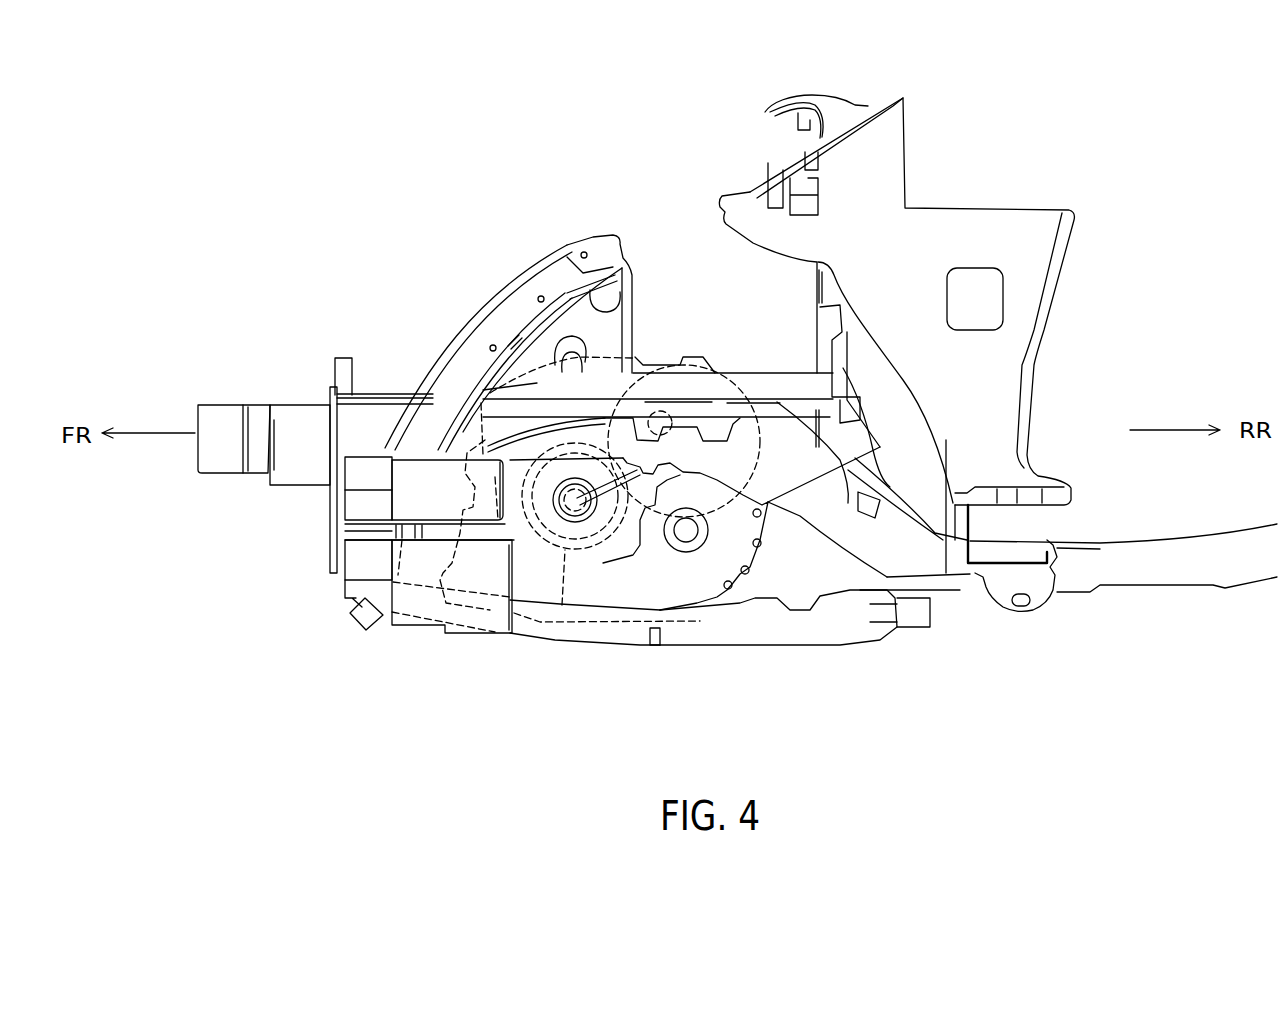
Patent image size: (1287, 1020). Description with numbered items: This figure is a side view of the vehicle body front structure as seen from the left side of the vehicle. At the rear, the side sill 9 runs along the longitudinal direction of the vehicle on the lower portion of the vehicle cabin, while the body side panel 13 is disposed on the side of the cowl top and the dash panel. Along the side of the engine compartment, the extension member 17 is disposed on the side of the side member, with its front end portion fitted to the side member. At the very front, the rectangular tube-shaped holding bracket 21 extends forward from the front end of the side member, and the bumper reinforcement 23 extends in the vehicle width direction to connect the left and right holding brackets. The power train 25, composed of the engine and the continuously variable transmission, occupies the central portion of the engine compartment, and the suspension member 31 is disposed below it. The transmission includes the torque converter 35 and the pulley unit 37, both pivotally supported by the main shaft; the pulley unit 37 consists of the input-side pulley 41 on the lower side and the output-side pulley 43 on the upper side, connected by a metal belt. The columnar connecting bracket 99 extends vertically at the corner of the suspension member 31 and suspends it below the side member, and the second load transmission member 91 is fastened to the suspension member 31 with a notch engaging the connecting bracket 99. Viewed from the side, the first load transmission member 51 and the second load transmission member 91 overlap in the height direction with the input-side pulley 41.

The side sill 9 is at (1176, 572).
The body side panel 13 is at (985, 237).
The extension member 17 is at (474, 338).
The holding bracket 21 is at (301, 418).
The bumper reinforcement 23 is at (221, 418).
The power train 25 is at (691, 356).
The suspension member 31 is at (625, 633).
The torque converter 35 is at (591, 600).
The pulley unit 37 is at (633, 560).
The input-side pulley 41 is at (562, 605).
The output-side pulley 43 is at (658, 385).
The first load transmission member 51 is at (358, 500).
The second load transmission member 91 is at (358, 566).
The connecting bracket 99 is at (355, 530).